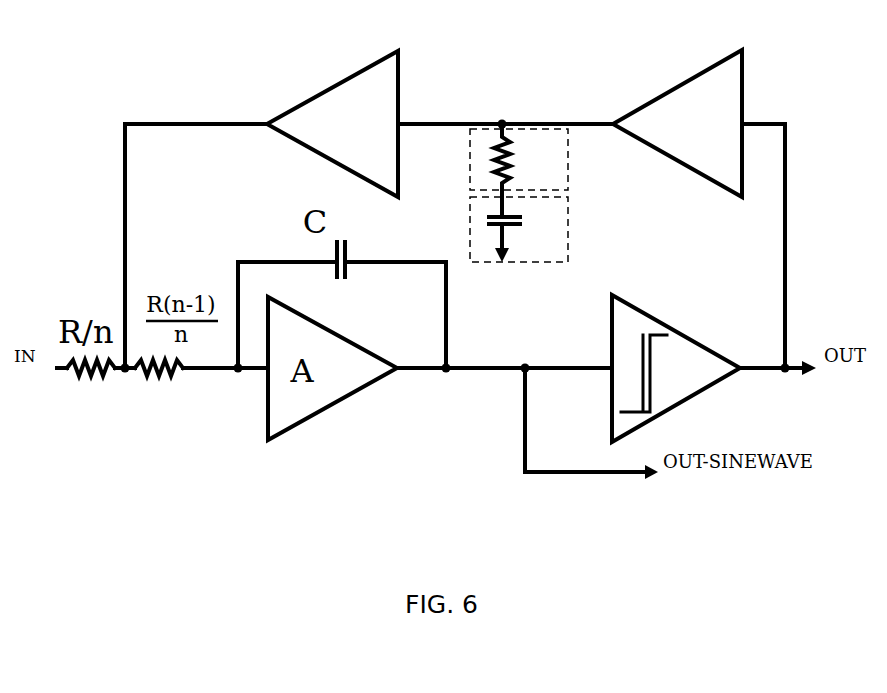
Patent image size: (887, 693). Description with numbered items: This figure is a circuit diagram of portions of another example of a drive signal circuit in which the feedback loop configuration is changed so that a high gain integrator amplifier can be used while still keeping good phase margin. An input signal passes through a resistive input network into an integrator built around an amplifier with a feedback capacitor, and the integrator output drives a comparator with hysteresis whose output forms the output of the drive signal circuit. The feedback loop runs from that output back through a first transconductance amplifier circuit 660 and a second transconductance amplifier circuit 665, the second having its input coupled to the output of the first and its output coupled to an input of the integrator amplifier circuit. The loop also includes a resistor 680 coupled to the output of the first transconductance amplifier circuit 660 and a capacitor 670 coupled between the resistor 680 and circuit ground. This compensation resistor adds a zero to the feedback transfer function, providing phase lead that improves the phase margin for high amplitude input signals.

The first transconductance amplifier circuit 660 is at (745, 67).
The second transconductance amplifier circuit 665 is at (401, 72).
The resistor 680 is at (567, 175).
The capacitor 670 is at (567, 240).